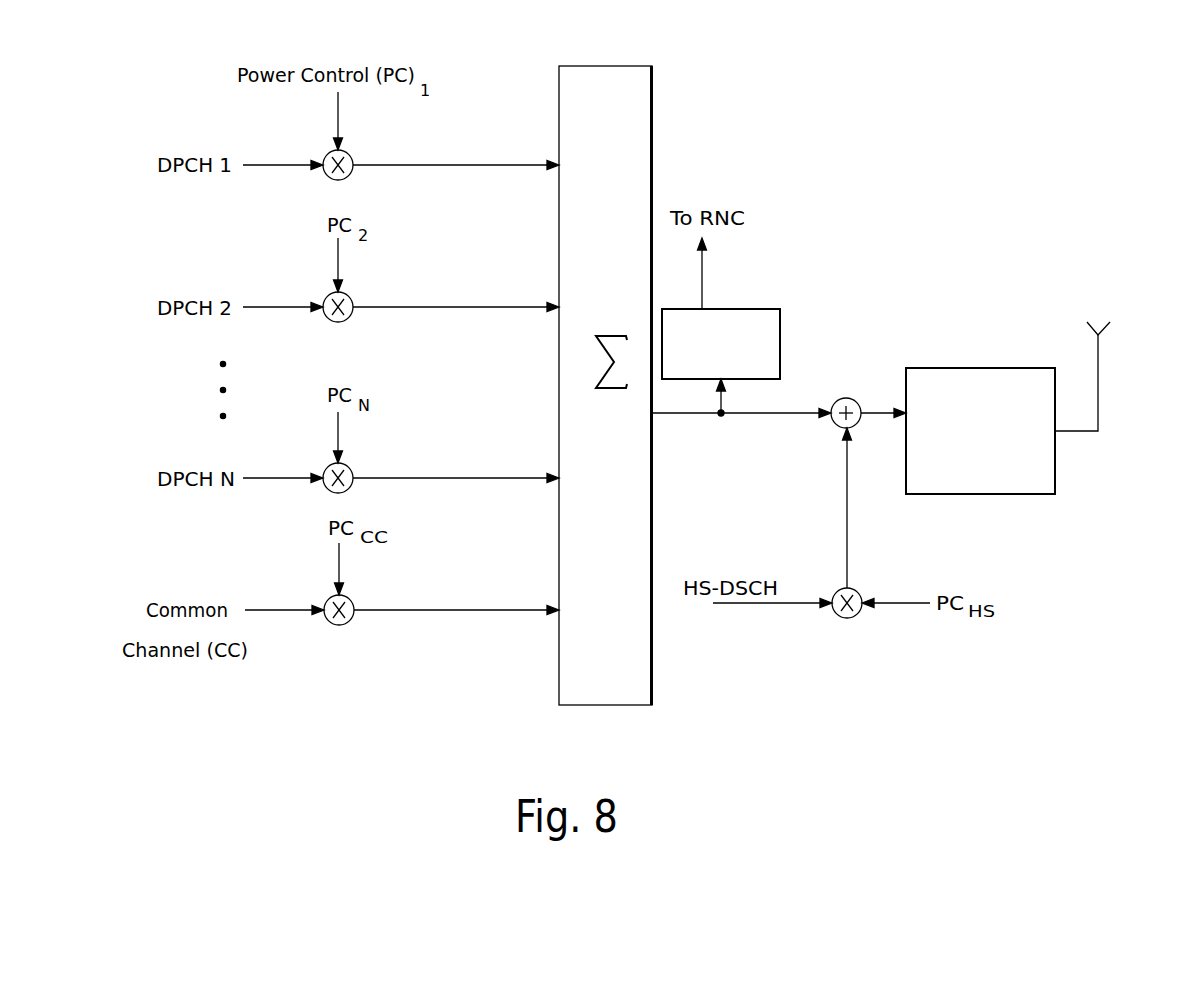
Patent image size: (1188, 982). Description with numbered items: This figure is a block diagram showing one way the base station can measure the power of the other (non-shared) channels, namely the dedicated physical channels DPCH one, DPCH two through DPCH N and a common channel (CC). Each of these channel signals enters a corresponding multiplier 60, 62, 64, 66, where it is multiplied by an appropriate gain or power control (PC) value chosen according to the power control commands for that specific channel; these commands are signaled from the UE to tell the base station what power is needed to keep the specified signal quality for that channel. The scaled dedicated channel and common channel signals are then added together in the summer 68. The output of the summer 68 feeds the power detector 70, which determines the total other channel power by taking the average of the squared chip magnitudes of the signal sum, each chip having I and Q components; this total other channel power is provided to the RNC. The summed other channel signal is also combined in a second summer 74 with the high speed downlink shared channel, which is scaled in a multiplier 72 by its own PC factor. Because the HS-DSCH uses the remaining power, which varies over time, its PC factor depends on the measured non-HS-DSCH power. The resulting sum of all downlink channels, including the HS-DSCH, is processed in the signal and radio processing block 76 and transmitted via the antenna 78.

The multiplier 60 is at (351, 153).
The multiplier 62 is at (351, 295).
The multiplier 64 is at (351, 466).
The multiplier 66 is at (352, 598).
The summer 68 is at (652, 110).
The power detector 70 is at (748, 309).
The multiplier 72 is at (860, 591).
The summer 74 is at (843, 398).
The signal and radio processing block 76 is at (952, 368).
The antenna 78 is at (1105, 331).